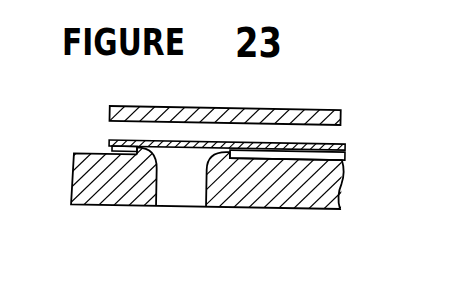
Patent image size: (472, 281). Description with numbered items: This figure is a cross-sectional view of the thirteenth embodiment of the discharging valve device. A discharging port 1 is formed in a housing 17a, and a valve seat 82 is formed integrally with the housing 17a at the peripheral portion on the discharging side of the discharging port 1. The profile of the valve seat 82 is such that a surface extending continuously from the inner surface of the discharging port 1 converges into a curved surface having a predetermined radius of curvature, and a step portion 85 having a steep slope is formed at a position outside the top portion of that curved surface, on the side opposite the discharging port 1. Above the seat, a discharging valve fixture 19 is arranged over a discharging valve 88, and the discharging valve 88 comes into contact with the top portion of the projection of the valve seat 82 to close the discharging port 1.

The discharging port 1 is at (180, 180).
The valve seat 82 is at (156, 167).
The discharging valve fixture 19 is at (262, 116).
The discharging valve 88 is at (321, 149).
The housing 17a is at (316, 157).
The step portion 85 is at (135, 151).